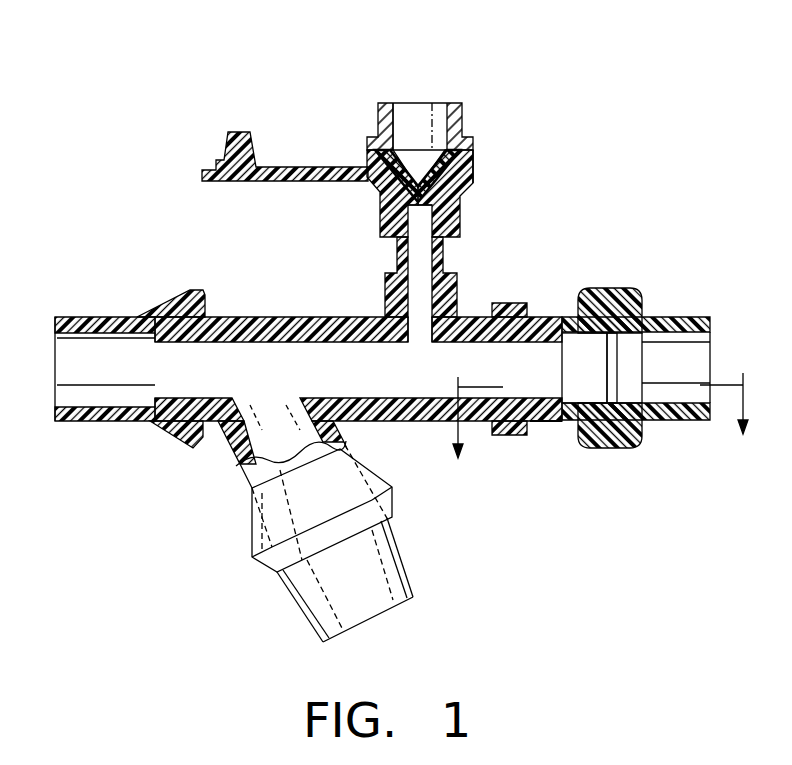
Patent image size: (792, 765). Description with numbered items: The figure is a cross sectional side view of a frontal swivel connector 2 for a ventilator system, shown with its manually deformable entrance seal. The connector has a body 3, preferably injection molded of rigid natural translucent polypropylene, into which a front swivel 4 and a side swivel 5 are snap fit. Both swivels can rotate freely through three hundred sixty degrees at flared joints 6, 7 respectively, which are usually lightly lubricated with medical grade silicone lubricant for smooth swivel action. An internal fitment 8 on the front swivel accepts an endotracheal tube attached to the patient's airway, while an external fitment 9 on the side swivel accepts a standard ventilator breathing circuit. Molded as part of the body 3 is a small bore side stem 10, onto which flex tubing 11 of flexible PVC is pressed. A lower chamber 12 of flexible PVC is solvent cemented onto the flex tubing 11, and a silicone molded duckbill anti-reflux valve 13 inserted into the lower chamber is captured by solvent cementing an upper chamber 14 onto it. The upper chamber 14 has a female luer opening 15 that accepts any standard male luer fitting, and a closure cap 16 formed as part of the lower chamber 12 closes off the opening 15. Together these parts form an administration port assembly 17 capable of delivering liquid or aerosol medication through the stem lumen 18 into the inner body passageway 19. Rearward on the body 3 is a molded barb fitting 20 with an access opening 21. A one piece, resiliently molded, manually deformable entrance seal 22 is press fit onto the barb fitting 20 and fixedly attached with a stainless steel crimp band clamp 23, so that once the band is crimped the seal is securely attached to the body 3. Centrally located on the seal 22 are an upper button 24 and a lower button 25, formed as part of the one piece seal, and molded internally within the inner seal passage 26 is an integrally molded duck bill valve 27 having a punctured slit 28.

The frontal swivel connector 2 is at (236, 470).
The body 3 is at (621, 401).
The front swivel 4 is at (124, 317).
The side swivel 5 is at (257, 558).
The flared joint 6 is at (160, 302).
The flared joint 7 is at (252, 520).
The internal fitment 8 is at (62, 403).
The external fitment 9 is at (412, 594).
The side stem 10 is at (440, 290).
The flex tubing 11 is at (395, 270).
The lower chamber 12 is at (476, 198).
The duckbill anti-reflux valve 13 is at (460, 147).
The upper chamber 14 is at (378, 122).
The female luer opening 15 is at (415, 107).
The closure cap 16 is at (228, 131).
The administration port assembly 17 is at (484, 184).
The stem lumen 18 is at (417, 303).
The inner body passageway 19 is at (422, 343).
The barb fitting 20 is at (548, 410).
The access opening 21 is at (545, 422).
The manually deformable entrance seal 22 is at (567, 313).
The crimp band clamp 23 is at (508, 303).
The upper button 24 is at (612, 289).
The lower button 25 is at (612, 448).
The inner seal passage 26 is at (700, 342).
The duck bill valve 27 is at (635, 392).
The punctured slit 28 is at (620, 360).